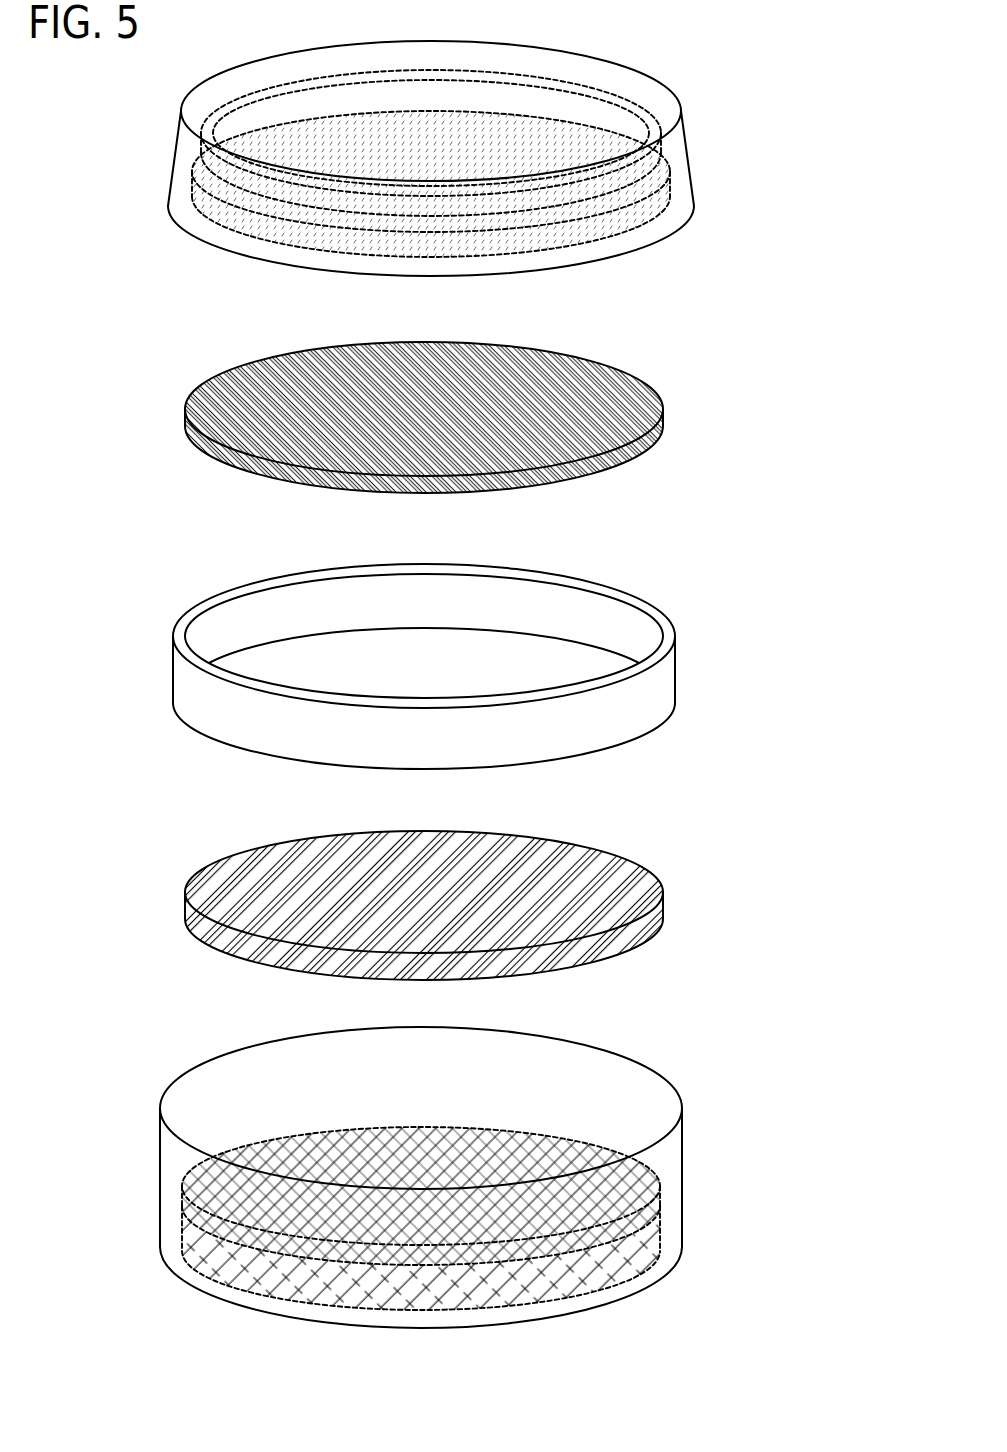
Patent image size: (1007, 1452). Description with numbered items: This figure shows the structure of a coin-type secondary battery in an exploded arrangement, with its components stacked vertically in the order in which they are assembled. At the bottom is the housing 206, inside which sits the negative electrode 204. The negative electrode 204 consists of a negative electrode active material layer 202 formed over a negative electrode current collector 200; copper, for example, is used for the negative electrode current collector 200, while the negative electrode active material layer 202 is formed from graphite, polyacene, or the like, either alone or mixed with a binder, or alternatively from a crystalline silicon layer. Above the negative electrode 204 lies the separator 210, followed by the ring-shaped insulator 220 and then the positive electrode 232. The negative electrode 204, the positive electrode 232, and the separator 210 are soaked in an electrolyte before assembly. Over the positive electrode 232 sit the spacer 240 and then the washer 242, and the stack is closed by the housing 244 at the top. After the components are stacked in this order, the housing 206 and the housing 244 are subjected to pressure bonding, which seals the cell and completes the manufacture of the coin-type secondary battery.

The housing 244 is at (683, 115).
The washer 242 is at (212, 145).
The spacer 240 is at (232, 220).
The positive electrode 232 is at (663, 436).
The ring-shaped insulator 220 is at (675, 676).
The separator 210 is at (197, 919).
The housing 206 is at (682, 1165).
The negative electrode 204 is at (501, 1218).
The negative electrode active material layer 202 is at (660, 1222).
The negative electrode current collector 200 is at (755, 1207).